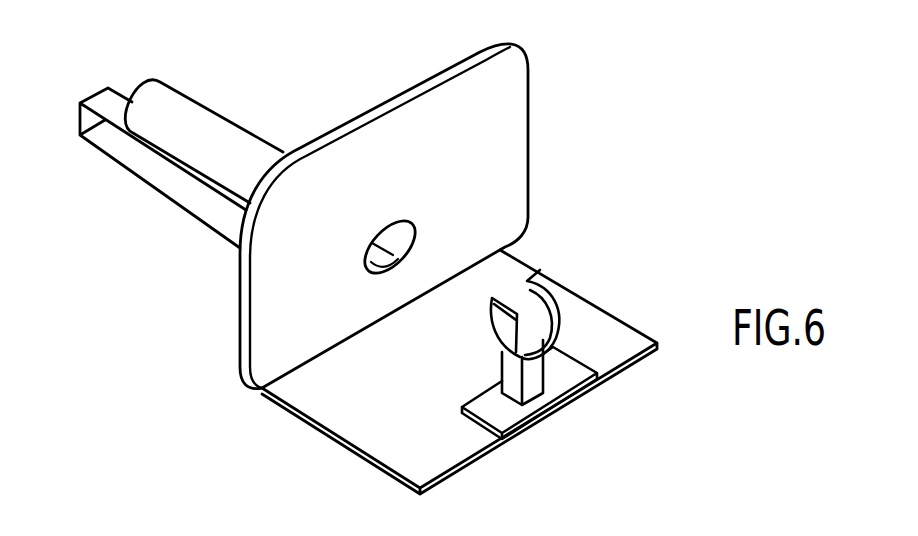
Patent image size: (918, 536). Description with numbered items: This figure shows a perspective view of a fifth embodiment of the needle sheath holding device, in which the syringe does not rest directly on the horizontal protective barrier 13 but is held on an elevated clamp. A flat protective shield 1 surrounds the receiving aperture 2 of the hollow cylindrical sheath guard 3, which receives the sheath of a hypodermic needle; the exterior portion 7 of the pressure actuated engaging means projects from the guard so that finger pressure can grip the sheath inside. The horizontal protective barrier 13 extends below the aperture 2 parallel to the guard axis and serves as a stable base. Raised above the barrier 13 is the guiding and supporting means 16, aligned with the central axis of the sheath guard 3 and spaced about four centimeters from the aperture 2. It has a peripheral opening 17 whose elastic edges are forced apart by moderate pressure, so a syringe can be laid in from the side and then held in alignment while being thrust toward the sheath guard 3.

The protective shield 1 is at (492, 93).
The receiving aperture 2 is at (410, 220).
The hollow cylindrical sheath guard 3 is at (186, 113).
The exterior portion of the pressure actuated means 7 is at (140, 180).
The horizontal protective barrier 13 is at (317, 428).
The guiding and supporting means 16 is at (595, 367).
The peripheral opening 17 is at (517, 292).